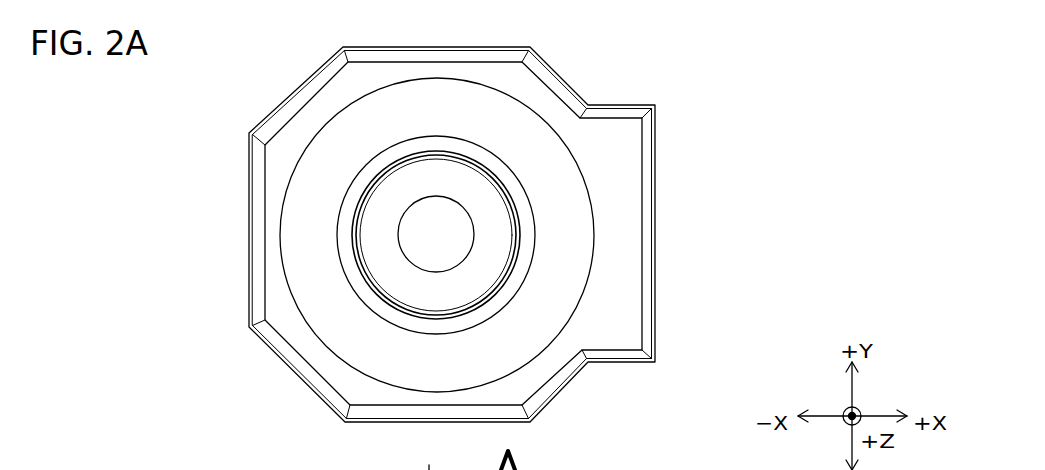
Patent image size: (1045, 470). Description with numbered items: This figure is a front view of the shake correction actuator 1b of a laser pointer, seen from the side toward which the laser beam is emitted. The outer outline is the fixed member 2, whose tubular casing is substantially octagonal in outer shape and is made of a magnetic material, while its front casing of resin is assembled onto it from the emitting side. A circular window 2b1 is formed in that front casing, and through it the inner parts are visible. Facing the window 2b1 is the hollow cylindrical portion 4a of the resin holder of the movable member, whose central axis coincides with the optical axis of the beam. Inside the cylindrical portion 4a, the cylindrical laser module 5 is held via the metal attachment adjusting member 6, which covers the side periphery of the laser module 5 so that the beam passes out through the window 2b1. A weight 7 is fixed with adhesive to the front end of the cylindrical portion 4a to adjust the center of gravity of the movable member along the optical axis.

The shake correction actuator 1b is at (790, 135).
The fixed member 2 is at (290, 97).
The window 2b1 is at (338, 203).
The cylindrical portion 4a is at (353, 245).
The laser module 5 is at (455, 238).
The attachment adjusting member 6 is at (493, 198).
The weight 7 is at (353, 280).